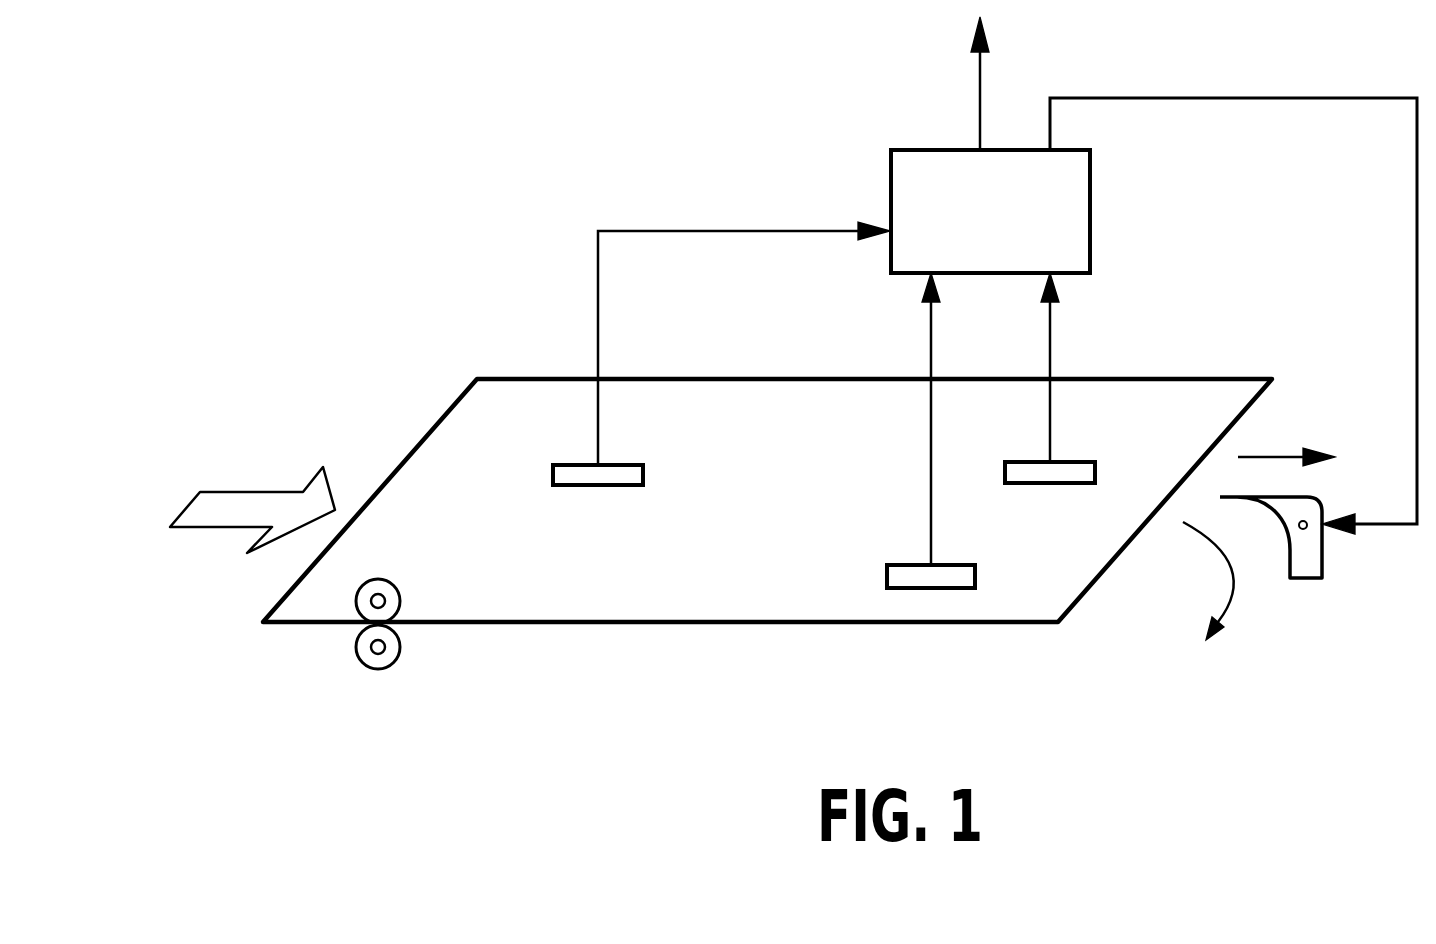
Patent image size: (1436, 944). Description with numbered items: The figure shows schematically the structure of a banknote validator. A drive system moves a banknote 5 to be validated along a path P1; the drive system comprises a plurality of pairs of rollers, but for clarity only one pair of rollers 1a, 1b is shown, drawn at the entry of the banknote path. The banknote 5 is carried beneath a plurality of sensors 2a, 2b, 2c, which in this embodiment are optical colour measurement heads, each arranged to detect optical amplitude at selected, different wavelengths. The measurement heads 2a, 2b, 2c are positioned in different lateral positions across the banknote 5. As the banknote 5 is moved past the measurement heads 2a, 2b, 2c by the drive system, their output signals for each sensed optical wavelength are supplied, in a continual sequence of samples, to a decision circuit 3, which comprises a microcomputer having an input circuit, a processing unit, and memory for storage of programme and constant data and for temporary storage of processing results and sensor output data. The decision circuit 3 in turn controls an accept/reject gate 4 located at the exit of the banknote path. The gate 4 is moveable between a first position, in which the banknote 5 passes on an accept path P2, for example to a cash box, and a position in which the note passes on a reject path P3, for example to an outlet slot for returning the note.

The roller 1a is at (400, 655).
The roller 1b is at (350, 593).
The sensor 2a is at (620, 463).
The sensor 2b is at (1078, 460).
The sensor 2c is at (950, 590).
The decision circuit 3 is at (1090, 183).
The accept/reject gate 4 is at (1322, 557).
The banknote 5 is at (422, 442).
The path P1 is at (197, 530).
The accept path P2 is at (1273, 452).
The reject path P3 is at (1233, 600).